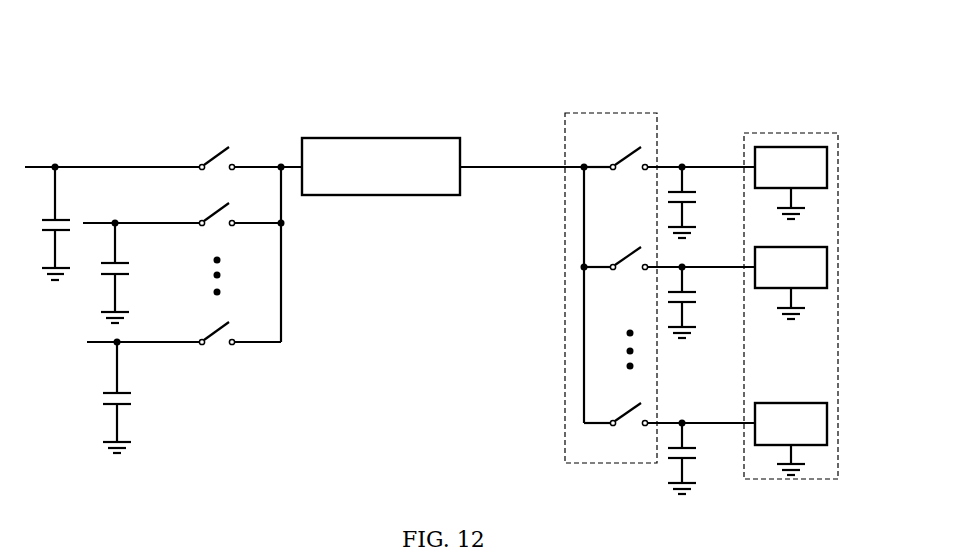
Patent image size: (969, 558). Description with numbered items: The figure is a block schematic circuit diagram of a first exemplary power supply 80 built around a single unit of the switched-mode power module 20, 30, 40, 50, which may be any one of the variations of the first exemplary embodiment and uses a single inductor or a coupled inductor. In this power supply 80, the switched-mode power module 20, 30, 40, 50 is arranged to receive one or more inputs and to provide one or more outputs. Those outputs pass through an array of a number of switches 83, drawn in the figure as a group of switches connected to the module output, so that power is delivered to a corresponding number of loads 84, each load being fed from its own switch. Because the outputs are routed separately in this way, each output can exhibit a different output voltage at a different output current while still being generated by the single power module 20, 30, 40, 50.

The power supply 80 is at (248, 61).
The switched-mode power module 20 is at (398, 116).
The switched-mode power module 30 is at (398, 116).
The switched-mode power module 40 is at (398, 116).
The switched-mode power module 50 is at (358, 128).
The switches 83 is at (628, 100).
The loads 84 is at (783, 123).